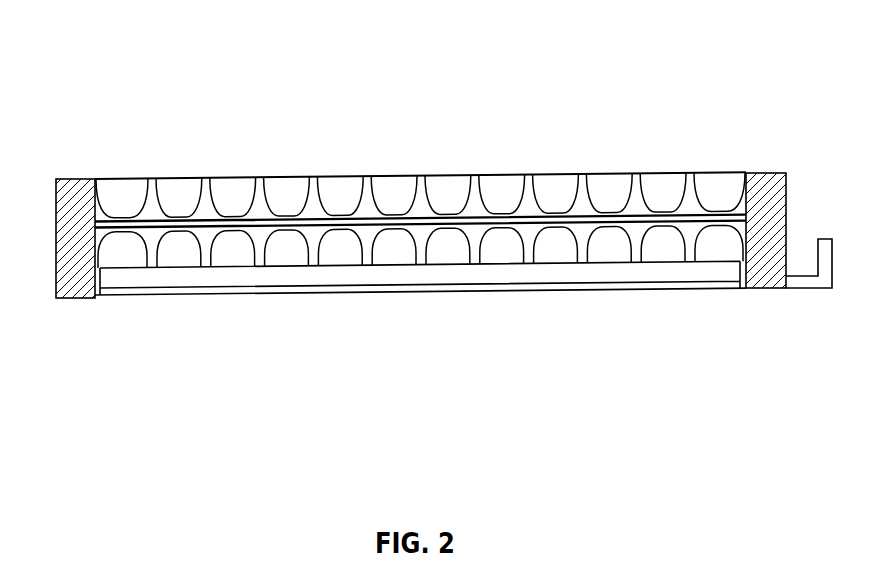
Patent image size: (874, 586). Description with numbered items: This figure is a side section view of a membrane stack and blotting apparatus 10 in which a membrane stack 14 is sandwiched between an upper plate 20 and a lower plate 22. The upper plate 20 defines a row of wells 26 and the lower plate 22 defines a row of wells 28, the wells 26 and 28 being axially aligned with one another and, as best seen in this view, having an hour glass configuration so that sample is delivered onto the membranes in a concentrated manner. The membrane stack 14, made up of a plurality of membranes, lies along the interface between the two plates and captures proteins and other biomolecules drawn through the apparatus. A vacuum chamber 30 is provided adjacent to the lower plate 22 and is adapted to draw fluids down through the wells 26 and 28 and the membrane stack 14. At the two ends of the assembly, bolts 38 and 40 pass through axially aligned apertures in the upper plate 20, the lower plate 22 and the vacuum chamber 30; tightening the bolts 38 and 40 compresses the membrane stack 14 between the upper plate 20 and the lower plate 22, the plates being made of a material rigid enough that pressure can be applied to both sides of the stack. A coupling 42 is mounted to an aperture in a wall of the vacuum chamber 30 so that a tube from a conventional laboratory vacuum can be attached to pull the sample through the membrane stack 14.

The solar panel assembly 10 is at (218, 151).
The membrane stack 14 is at (263, 193).
The upper plate 20 is at (100, 204).
The lower plate 22 is at (100, 252).
The wells 26 is at (497, 192).
The wells 28 is at (655, 245).
The vacuum chamber 30 is at (112, 288).
The bolt 38 is at (72, 186).
The bolt 40 is at (766, 181).
The coupling 42 is at (808, 293).